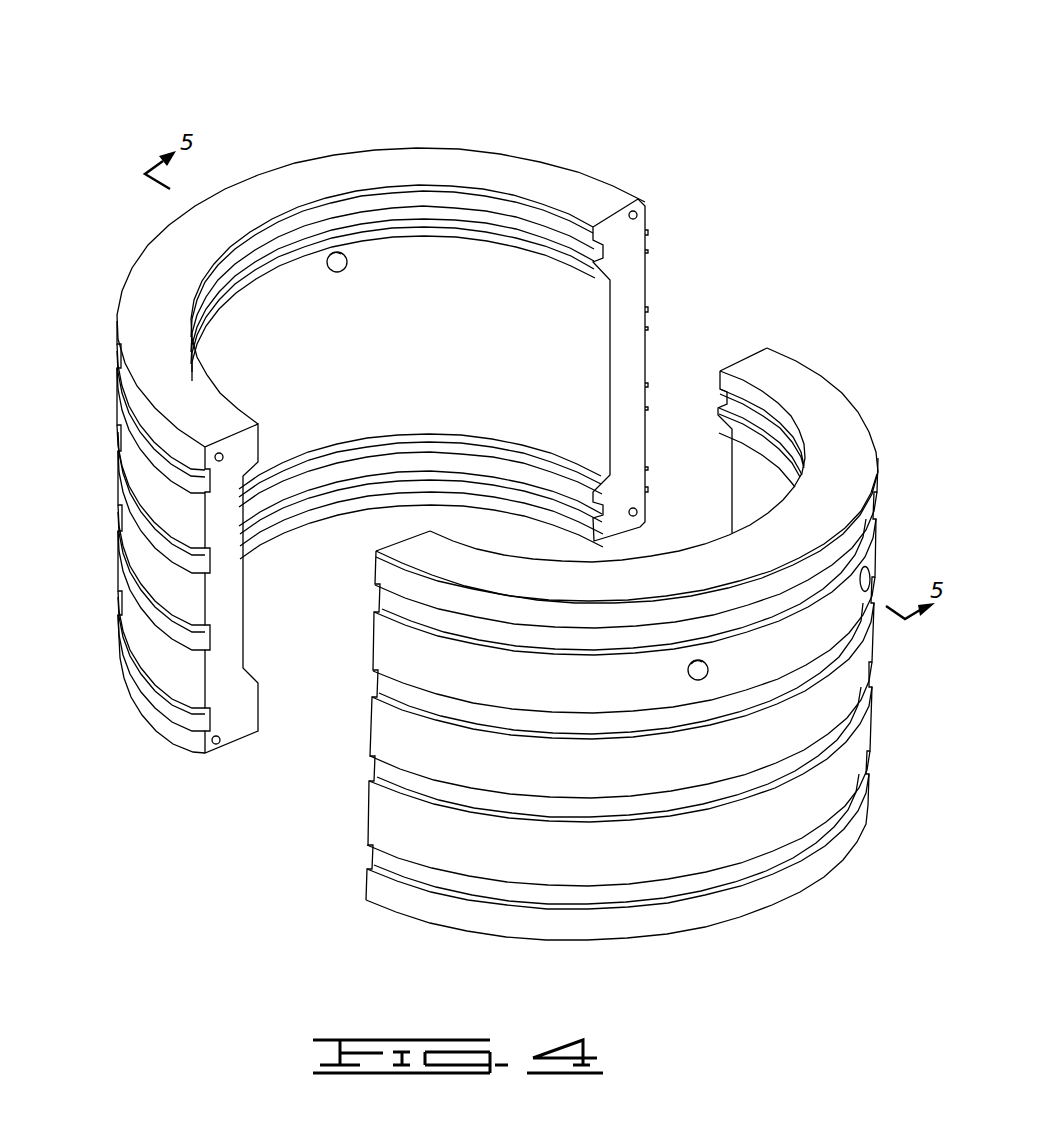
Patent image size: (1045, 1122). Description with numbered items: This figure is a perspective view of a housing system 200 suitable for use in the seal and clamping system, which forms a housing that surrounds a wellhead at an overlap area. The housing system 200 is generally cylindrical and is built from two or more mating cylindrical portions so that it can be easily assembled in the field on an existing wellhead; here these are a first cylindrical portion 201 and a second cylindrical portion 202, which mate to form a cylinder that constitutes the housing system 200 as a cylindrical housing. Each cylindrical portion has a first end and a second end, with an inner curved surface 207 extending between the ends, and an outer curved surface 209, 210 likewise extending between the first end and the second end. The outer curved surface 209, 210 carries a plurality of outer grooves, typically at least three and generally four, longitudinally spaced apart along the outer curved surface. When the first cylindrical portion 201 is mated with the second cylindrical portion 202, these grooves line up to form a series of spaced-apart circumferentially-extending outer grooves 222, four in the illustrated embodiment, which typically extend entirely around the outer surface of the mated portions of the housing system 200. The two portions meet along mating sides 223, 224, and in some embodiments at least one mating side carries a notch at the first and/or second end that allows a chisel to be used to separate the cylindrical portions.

The housing system 200 is at (226, 86).
The first cylindrical portion 201 is at (351, 448).
The second cylindrical portion 202 is at (564, 669).
The inner curved surface 207 is at (512, 297).
The outer curved surface 209 is at (132, 526).
The outer curved surface 210 is at (497, 816).
The circumferentially-extending outer grooves 222 is at (800, 616).
The mating side 223 is at (222, 706).
The mating side 224 is at (367, 772).